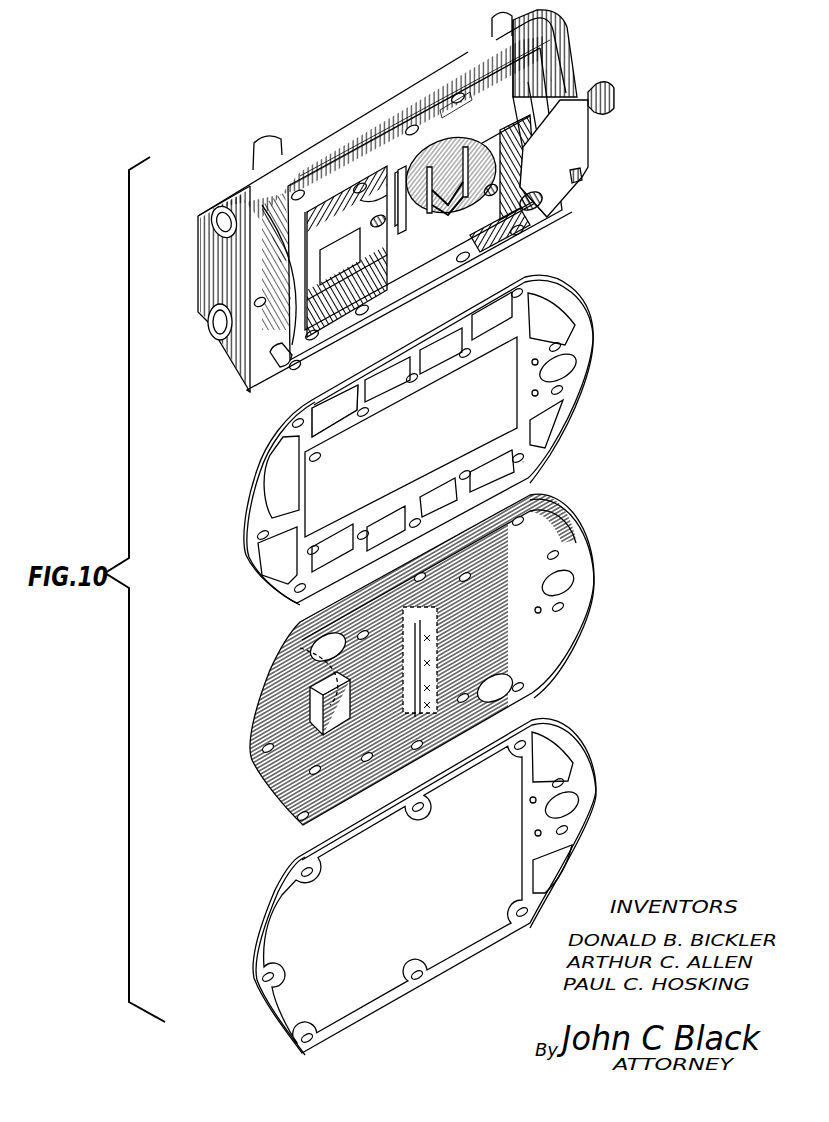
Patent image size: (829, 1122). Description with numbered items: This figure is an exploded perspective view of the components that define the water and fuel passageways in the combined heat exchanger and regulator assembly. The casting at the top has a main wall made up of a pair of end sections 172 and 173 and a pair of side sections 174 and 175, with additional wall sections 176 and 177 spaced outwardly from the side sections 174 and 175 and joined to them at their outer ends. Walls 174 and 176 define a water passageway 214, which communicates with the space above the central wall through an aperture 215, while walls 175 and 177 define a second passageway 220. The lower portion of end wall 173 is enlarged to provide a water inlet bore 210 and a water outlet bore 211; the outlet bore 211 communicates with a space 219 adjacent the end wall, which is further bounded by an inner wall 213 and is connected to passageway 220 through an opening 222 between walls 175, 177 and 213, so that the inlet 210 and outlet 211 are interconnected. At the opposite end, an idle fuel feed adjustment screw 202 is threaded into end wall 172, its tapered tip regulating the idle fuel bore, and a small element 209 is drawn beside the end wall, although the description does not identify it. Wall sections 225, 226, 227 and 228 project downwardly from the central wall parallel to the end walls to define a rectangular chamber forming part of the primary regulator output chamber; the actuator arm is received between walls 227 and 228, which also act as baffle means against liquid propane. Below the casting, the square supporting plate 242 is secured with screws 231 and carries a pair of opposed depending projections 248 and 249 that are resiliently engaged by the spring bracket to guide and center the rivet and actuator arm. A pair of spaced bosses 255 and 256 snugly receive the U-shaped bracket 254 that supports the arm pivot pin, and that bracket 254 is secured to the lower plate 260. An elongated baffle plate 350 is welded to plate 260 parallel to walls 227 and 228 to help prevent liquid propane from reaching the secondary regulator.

The end section 172 is at (578, 127).
The end section 173 is at (215, 275).
The side section 174 is at (458, 100).
The side section 175 is at (552, 216).
The additional wall section 176 is at (344, 133).
The additional wall section 177 is at (410, 302).
The idle fuel feed adjustment screw 202 is at (609, 88).
The pin 209 is at (586, 174).
The water inlet bore 210 is at (213, 322).
The water outlet bore 211 is at (214, 222).
The inner wall 213 is at (269, 248).
The passageway 214 is at (386, 157).
The aperture 215 is at (530, 83).
The space 219 is at (276, 332).
The passageway 220 is at (351, 323).
The opening 222 is at (298, 338).
The wall section 225 is at (540, 199).
The wall section 226 is at (526, 115).
The wall section 227 is at (373, 270).
The wall section 228 is at (400, 200).
The screw 231 is at (484, 197).
The supporting plate 242 is at (493, 127).
The depending projection 248 is at (433, 172).
The depending projection 249 is at (457, 218).
The U-shaped bracket 254 is at (300, 648).
The boss 255 is at (356, 268).
The boss 256 is at (371, 223).
The lower plate 260 is at (287, 677).
The baffle plate 350 is at (433, 647).